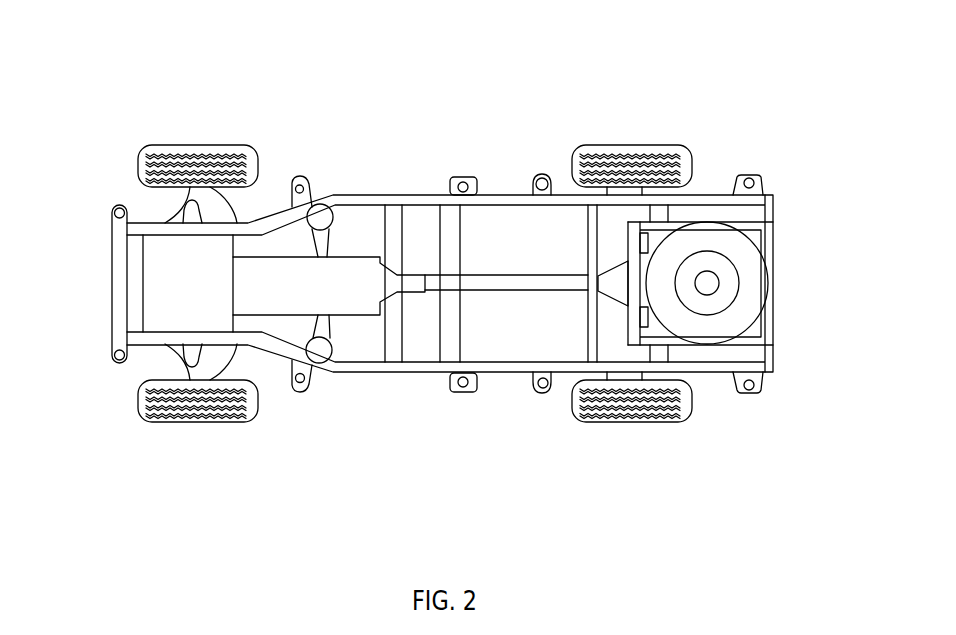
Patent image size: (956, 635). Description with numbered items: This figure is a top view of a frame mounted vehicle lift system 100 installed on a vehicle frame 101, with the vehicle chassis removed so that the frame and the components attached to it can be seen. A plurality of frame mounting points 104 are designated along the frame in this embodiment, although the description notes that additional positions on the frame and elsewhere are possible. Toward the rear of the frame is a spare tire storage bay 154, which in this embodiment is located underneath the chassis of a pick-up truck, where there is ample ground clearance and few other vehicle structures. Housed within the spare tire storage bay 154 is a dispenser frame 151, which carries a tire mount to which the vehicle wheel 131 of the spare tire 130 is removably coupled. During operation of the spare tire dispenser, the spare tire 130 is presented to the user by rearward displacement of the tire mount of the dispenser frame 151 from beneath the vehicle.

The frame mounted vehicle lift system 100 is at (755, 108).
The frame 101 is at (435, 368).
The frame mounting points 104 is at (312, 188).
The spare tire 130 is at (748, 312).
The vehicle wheel 131 is at (725, 268).
The dispenser frame 151 is at (750, 340).
The spare tire storage bay 154 is at (800, 266).